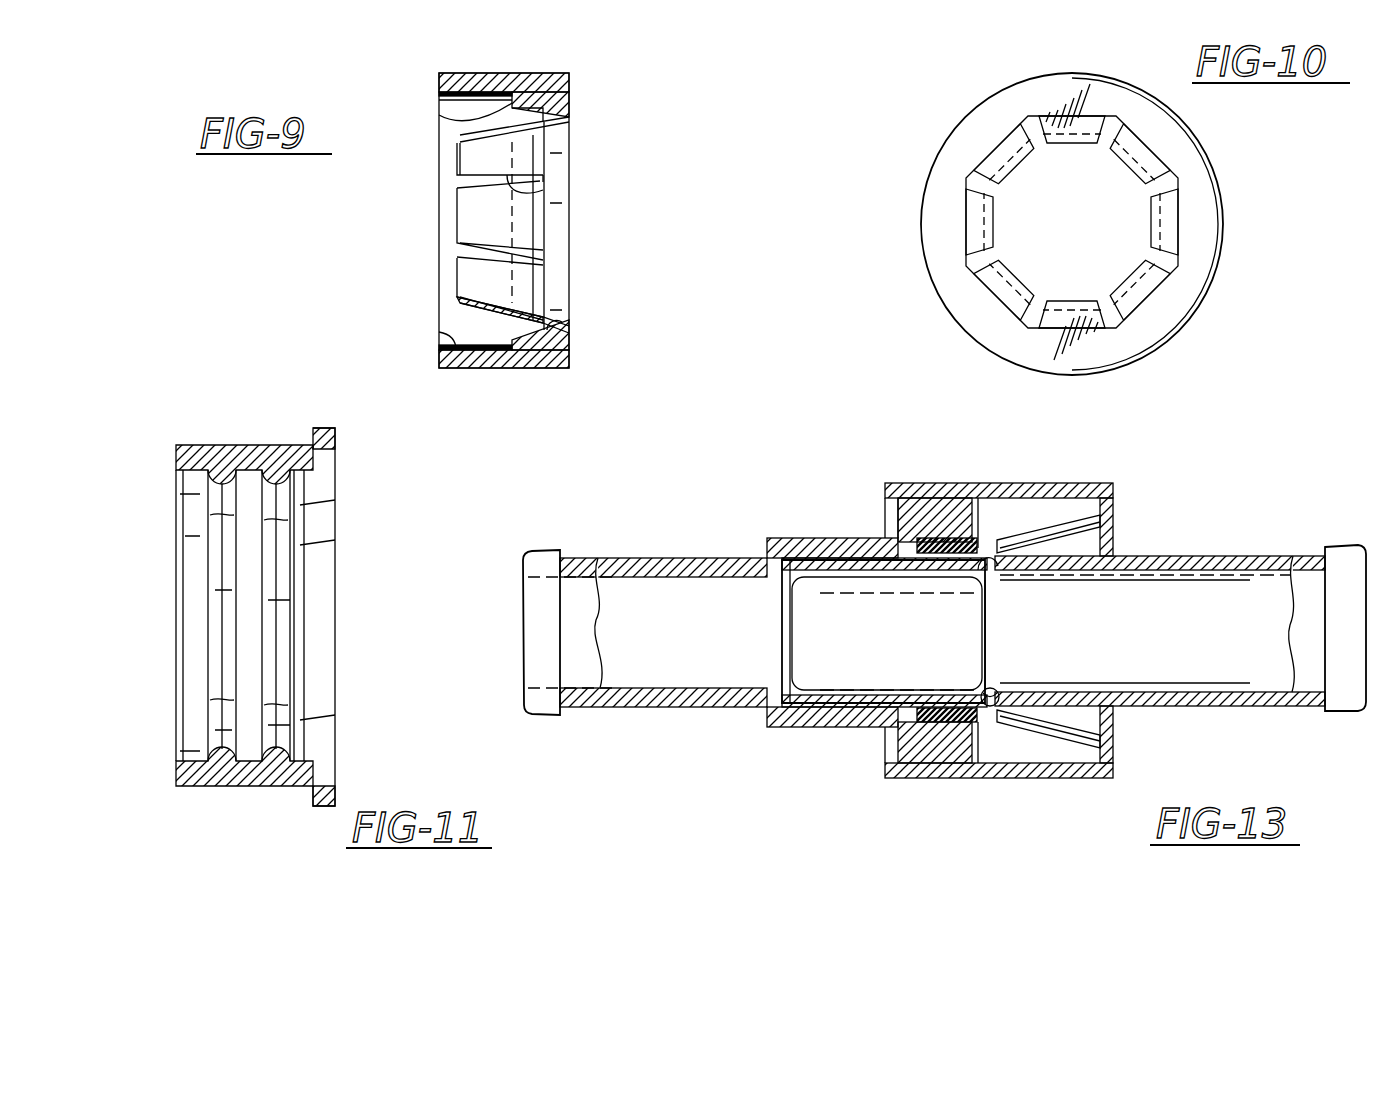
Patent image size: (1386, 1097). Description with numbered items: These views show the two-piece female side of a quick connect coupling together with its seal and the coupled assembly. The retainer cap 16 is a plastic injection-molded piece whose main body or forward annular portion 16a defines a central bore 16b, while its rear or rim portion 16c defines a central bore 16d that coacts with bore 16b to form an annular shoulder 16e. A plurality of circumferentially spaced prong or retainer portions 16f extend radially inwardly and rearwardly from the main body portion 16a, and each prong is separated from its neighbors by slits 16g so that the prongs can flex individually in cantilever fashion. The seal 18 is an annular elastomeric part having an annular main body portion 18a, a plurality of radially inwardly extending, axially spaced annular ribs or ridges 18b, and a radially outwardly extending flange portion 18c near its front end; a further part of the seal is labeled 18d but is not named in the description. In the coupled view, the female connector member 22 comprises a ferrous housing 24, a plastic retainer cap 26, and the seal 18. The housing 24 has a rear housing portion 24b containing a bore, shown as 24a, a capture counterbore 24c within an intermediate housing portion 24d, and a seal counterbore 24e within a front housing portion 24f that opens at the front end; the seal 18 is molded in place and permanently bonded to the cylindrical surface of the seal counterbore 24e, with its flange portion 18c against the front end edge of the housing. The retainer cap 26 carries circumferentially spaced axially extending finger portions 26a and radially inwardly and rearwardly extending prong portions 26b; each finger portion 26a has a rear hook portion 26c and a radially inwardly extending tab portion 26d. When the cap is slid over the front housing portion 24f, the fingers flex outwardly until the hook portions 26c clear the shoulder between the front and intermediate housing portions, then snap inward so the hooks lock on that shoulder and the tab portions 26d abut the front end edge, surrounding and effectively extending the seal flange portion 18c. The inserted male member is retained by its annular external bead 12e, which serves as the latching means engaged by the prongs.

In FIG. 13, the annular external bead 12e is at (994, 692).
In FIG. 9, the retainer cap 16 is at (515, 236).
In FIG. 10, the retainer cap 16 is at (955, 102).
In FIG. 9, the main body or forward annular portion 16a is at (558, 73).
In FIG. 9, the central bore 16b is at (547, 334).
In FIG. 9, the rear or rim portion 16c is at (470, 368).
In FIG. 9, the central bore 16d is at (455, 340).
In FIG. 9, the annular shoulder 16e is at (455, 122).
In FIG. 9, the prong or retainer portions 16f is at (457, 198).
In FIG. 9, the slits 16g is at (520, 190).
In FIG. 11, the seal 18 is at (240, 597).
In FIG. 13, the seal 18 is at (945, 690).
In FIG. 11, the annular main body portion 18a is at (257, 445).
In FIG. 11, the annular ribs or ridges 18b is at (280, 569).
In FIG. 13, the annular ribs or ridges 18b is at (963, 695).
In FIG. 11, the flange portion 18c is at (338, 436).
In FIG. 13, the flange portion 18c is at (1000, 722).
In FIG. 11, the insert bottom wall 18d is at (176, 465).
In FIG. 13, the female connector member 22 is at (855, 468).
In FIG. 13, the housing 24 is at (749, 631).
In FIG. 13, the tube wall 24a is at (672, 690).
In FIG. 13, the rear housing portion 24b is at (575, 550).
In FIG. 13, the capture counterbore 24c is at (847, 690).
In FIG. 13, the intermediate housing portion 24d is at (790, 538).
In FIG. 13, the seal counterbore 24e is at (950, 724).
In FIG. 13, the front housing portion 24f is at (920, 485).
In FIG. 13, the retainer cap 26 is at (1073, 627).
In FIG. 13, the finger portions 26a is at (975, 483).
In FIG. 13, the prong portions 26b is at (1115, 540).
In FIG. 13, the rear hook portion 26c is at (898, 500).
In FIG. 13, the tab portion 26d is at (1025, 500).